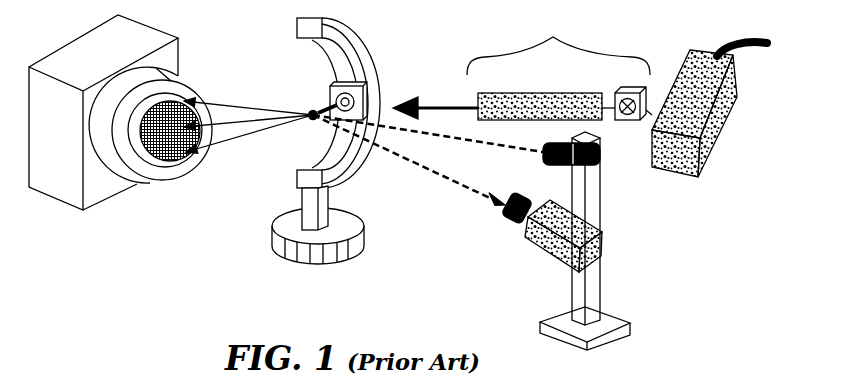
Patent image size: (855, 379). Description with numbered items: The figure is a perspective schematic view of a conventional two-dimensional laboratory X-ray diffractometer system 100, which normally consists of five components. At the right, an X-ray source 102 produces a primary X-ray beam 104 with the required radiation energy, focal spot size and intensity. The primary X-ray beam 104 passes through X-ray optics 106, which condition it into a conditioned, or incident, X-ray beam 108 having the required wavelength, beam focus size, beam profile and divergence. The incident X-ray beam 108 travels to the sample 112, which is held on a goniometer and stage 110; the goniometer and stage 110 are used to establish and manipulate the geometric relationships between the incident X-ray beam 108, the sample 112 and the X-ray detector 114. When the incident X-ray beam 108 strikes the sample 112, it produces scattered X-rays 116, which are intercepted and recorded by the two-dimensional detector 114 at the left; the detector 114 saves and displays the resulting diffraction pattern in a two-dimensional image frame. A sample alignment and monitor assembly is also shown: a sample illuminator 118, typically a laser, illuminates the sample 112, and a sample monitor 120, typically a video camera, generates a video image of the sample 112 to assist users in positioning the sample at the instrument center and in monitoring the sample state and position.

The two-dimensional laboratory diffractometer system 100 is at (147, 299).
The X-ray source 102 is at (688, 107).
The primary X-ray beam 104 is at (650, 110).
The X-ray optics 106 is at (558, 66).
The incident X-ray beam 108 is at (443, 102).
The goniometer and stage 110 is at (292, 228).
The sample 112 is at (306, 110).
The X-ray detector 114 is at (60, 175).
The scattered X-rays 116 is at (244, 141).
The sample illuminator 118 is at (600, 167).
The sample monitor 120 is at (532, 247).